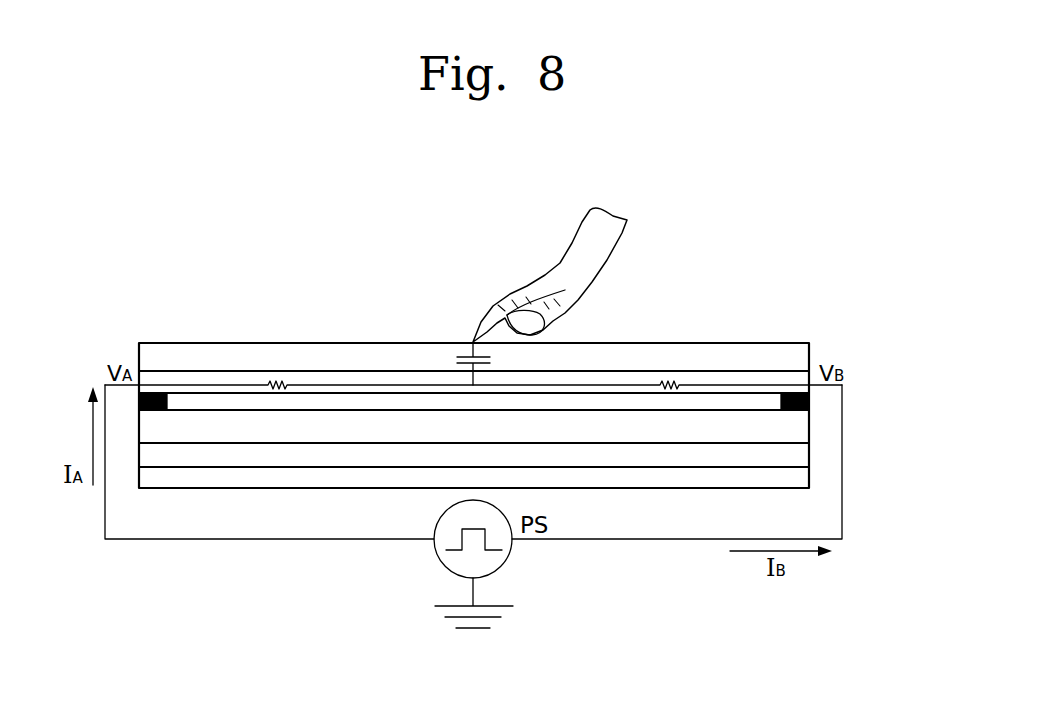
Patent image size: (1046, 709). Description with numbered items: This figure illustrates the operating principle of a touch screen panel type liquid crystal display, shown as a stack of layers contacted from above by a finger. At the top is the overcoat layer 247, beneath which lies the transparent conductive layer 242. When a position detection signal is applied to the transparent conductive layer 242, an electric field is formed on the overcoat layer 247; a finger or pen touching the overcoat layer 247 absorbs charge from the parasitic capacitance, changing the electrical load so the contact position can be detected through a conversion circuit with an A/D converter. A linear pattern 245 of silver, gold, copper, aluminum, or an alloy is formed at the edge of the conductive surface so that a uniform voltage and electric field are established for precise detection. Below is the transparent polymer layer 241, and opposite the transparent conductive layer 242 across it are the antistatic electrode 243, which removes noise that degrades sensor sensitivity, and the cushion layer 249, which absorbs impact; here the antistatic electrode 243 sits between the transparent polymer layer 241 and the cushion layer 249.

The overcoat layer 247 is at (803, 358).
The transparent conductive layer 242 is at (803, 390).
The linear pattern 245 is at (808, 405).
The transparent polymer layer 241 is at (803, 427).
The antistatic electrode 243 is at (803, 455).
The cushion layer 249 is at (803, 475).